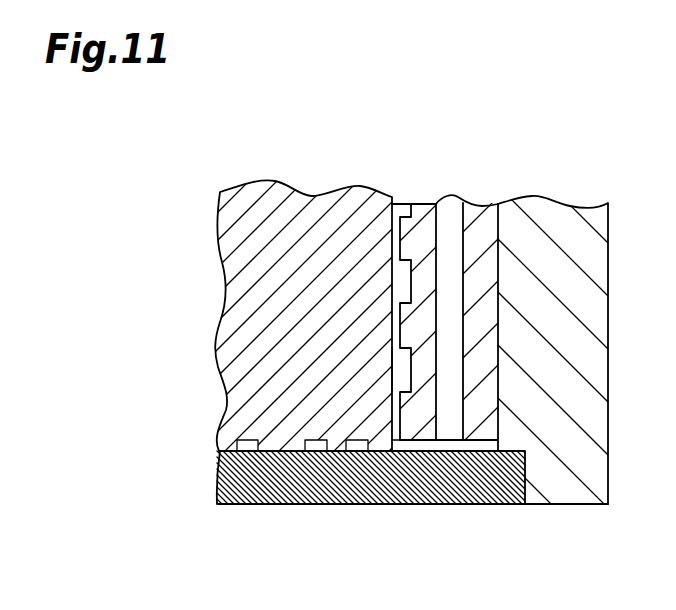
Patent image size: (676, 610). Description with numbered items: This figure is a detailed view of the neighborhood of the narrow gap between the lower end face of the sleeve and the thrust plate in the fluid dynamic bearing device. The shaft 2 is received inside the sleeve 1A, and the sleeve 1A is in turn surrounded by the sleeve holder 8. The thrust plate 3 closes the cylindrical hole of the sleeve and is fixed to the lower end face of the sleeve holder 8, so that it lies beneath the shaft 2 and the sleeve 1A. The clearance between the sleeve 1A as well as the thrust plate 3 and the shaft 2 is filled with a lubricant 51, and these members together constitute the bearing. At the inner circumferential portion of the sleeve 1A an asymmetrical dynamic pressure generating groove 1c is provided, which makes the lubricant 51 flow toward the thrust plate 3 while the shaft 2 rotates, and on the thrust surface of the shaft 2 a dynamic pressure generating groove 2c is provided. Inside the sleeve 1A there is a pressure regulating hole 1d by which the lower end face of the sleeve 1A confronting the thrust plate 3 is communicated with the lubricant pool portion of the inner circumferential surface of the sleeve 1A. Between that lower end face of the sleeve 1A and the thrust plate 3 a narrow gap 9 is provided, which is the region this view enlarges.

The shaft 2 is at (282, 230).
The dynamic pressure generating groove 2c is at (357, 445).
The thrust plate 3 is at (327, 478).
The dynamic pressure generating groove 1c is at (399, 262).
The pressure regulating hole 1d is at (450, 220).
The sleeve 1A is at (480, 222).
The sleeve holder 8 is at (560, 225).
The narrow gap 9 is at (433, 445).
The lubricant 51 is at (398, 373).